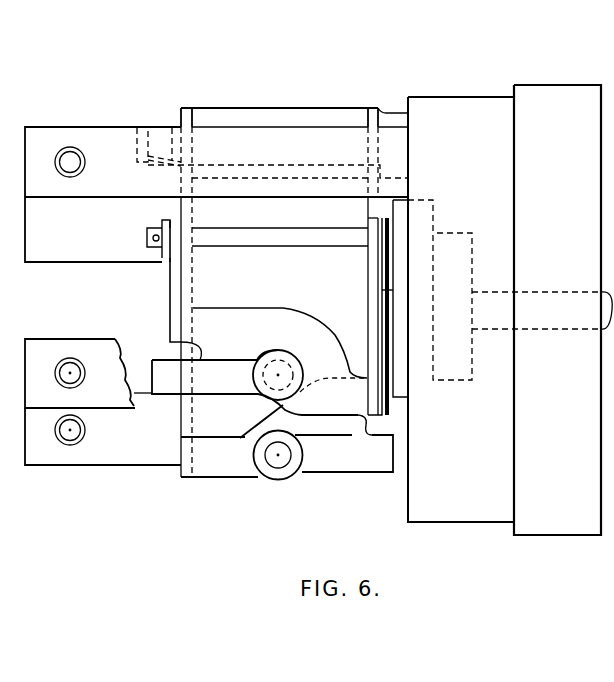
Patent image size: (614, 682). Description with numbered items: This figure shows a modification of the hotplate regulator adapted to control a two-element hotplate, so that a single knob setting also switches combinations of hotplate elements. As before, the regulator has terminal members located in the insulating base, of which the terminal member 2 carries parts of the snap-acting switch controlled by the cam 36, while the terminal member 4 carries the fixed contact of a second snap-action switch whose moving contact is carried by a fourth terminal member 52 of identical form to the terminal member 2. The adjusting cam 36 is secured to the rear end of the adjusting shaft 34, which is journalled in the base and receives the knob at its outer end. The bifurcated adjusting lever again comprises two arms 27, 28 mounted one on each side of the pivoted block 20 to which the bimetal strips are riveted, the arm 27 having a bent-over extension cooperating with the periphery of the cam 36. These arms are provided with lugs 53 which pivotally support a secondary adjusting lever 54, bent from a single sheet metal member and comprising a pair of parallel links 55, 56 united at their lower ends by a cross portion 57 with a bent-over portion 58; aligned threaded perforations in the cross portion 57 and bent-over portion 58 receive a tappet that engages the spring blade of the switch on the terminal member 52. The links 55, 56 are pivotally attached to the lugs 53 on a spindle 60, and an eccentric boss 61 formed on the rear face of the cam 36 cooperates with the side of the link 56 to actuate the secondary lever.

The terminal member 2 is at (108, 457).
The terminal member 4 is at (57, 132).
The block 20 is at (285, 113).
The arm 27 is at (377, 107).
The arm 28 is at (186, 107).
The adjusting shaft 34 is at (65, 252).
The adjusting cam 36 is at (408, 397).
The fourth terminal member 52 is at (60, 343).
The lugs 53 is at (187, 227).
The secondary adjusting lever 54 is at (272, 318).
The link 55 is at (175, 292).
The link 56 is at (384, 317).
The cross portion 57 is at (310, 325).
The bent-over portion 58 is at (213, 388).
The spindle 60 is at (282, 236).
The eccentric boss 61 is at (390, 293).